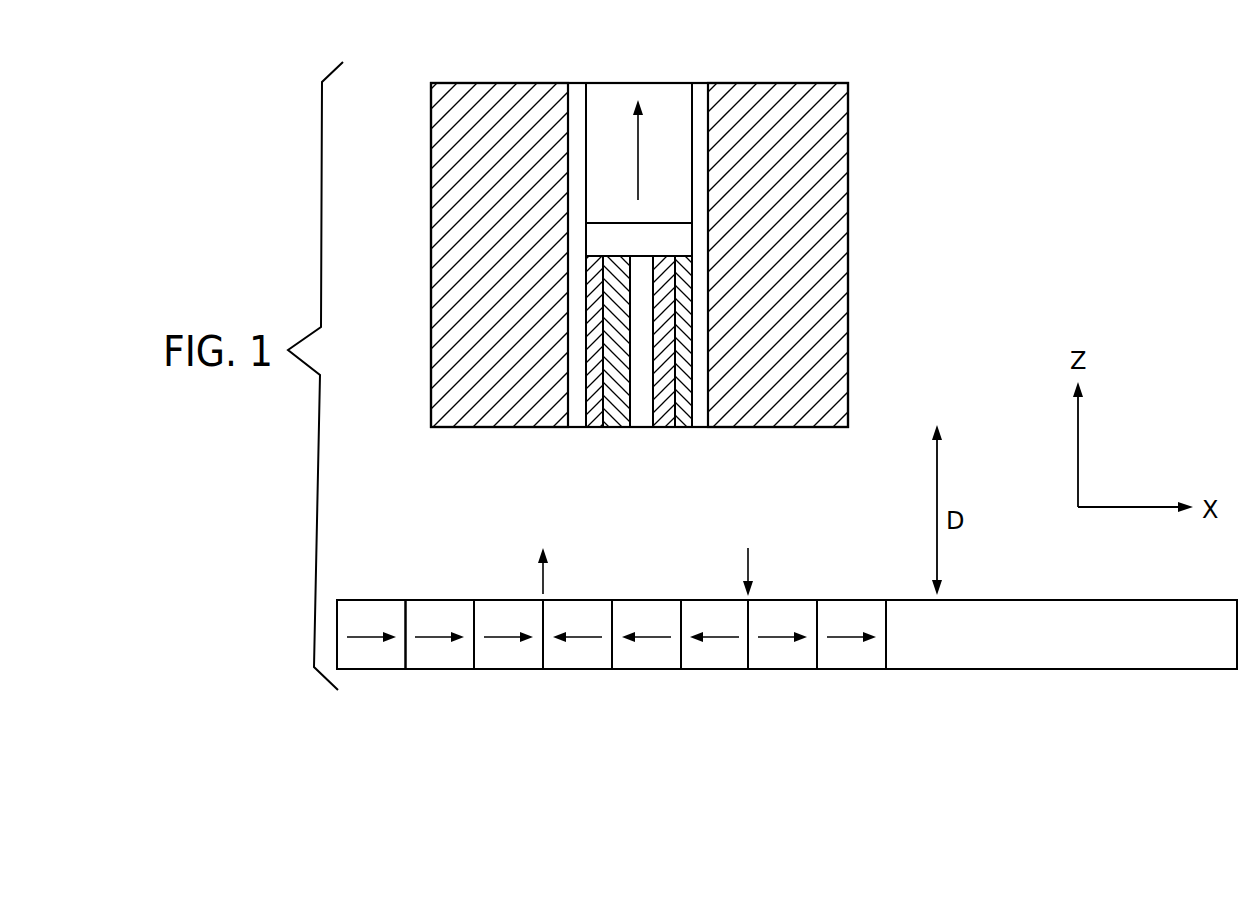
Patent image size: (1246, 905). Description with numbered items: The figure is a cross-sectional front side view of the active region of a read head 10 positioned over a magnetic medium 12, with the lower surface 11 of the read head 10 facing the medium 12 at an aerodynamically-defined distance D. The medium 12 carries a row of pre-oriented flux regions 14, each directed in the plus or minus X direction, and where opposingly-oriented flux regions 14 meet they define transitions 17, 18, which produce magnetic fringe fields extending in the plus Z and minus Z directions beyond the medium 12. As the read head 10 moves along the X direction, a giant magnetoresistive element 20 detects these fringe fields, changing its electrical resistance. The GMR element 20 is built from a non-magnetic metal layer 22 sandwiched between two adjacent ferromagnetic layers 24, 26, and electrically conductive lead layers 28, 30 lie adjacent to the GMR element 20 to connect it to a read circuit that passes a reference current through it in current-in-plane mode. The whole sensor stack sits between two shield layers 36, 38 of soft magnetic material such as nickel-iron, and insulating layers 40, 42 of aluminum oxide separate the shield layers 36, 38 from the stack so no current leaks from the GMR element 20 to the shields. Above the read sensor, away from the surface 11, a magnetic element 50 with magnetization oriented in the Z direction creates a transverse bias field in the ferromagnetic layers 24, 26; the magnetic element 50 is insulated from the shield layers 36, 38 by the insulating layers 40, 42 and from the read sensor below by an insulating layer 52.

The read head 10 is at (669, 298).
The lower surface 11 is at (449, 427).
The magnetic medium 12 is at (787, 661).
The pre-oriented flux regions 14 is at (390, 657).
The transition 17 is at (548, 686).
The transition 18 is at (763, 690).
The giant magnetoresistive (GMR) element 20 is at (649, 419).
The non-magnetic metal layer 22 is at (638, 430).
The ferromagnetic layer 24 is at (657, 430).
The ferromagnetic layer 26 is at (608, 430).
The electrically conductive lead layer 28 is at (686, 430).
The electrically conductive lead layer 30 is at (590, 430).
The shield layer 36 is at (838, 285).
The shield layer 38 is at (447, 303).
The insulating layer 40 is at (703, 432).
The insulating layer 42 is at (576, 430).
The magnetic element 50 is at (672, 97).
The insulating layer 52 is at (607, 238).